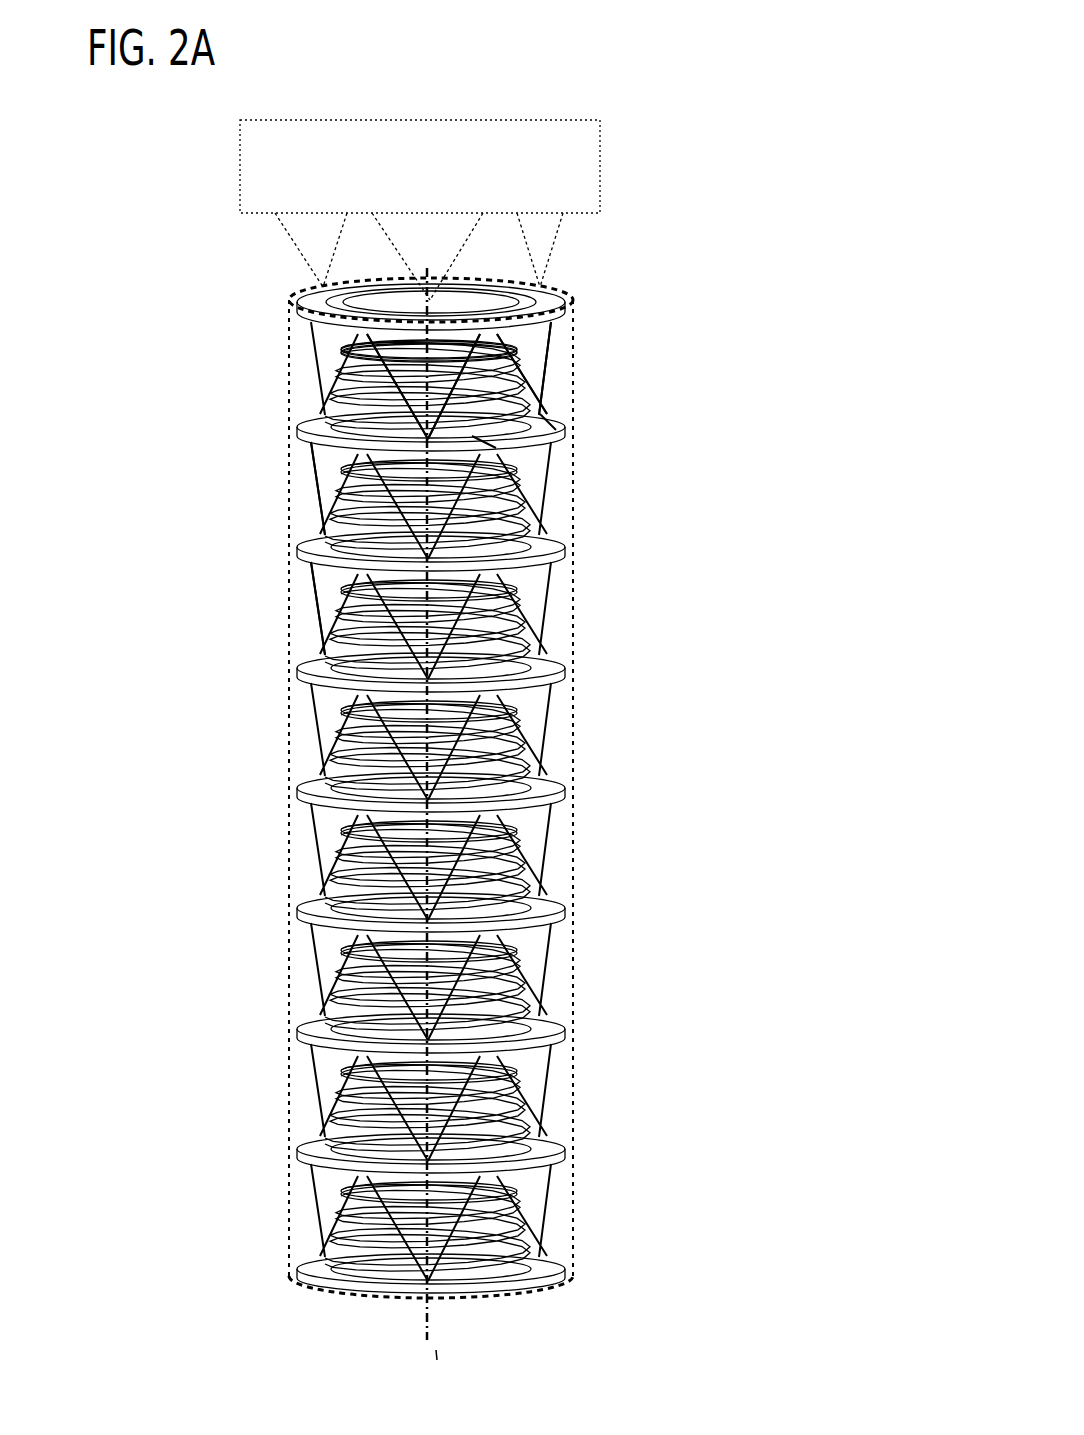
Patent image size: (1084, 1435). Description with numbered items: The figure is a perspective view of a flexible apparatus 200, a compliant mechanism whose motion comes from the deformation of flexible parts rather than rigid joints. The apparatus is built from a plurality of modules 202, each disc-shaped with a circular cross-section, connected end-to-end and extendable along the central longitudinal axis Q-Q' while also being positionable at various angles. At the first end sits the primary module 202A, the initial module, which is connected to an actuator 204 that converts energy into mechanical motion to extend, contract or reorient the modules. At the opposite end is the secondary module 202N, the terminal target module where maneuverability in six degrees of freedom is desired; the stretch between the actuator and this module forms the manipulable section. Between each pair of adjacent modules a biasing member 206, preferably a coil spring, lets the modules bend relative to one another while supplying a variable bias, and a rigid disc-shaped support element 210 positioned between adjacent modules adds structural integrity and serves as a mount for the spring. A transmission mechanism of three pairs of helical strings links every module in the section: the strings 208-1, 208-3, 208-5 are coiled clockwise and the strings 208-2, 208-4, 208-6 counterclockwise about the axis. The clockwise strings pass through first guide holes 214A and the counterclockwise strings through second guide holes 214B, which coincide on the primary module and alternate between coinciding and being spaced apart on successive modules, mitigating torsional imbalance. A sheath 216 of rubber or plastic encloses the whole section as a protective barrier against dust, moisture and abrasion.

The flexible apparatus 200 is at (604, 80).
The plurality of modules 202 is at (563, 920).
The primary module 202A is at (565, 304).
The secondary module 202N is at (572, 1282).
The actuator 204 is at (443, 183).
The biasing member 206 is at (338, 350).
The helical string 208-1 is at (480, 427).
The helical string 208-2 is at (307, 625).
The helical string 208-3 is at (515, 368).
The helical string 208-4 is at (540, 343).
The helical string 208-5 is at (308, 503).
The helical string 208-6 is at (360, 388).
The support element 210 is at (360, 855).
The first guide holes 214A is at (483, 442).
The second guide holes 214B is at (550, 423).
The sheath 216 is at (288, 722).